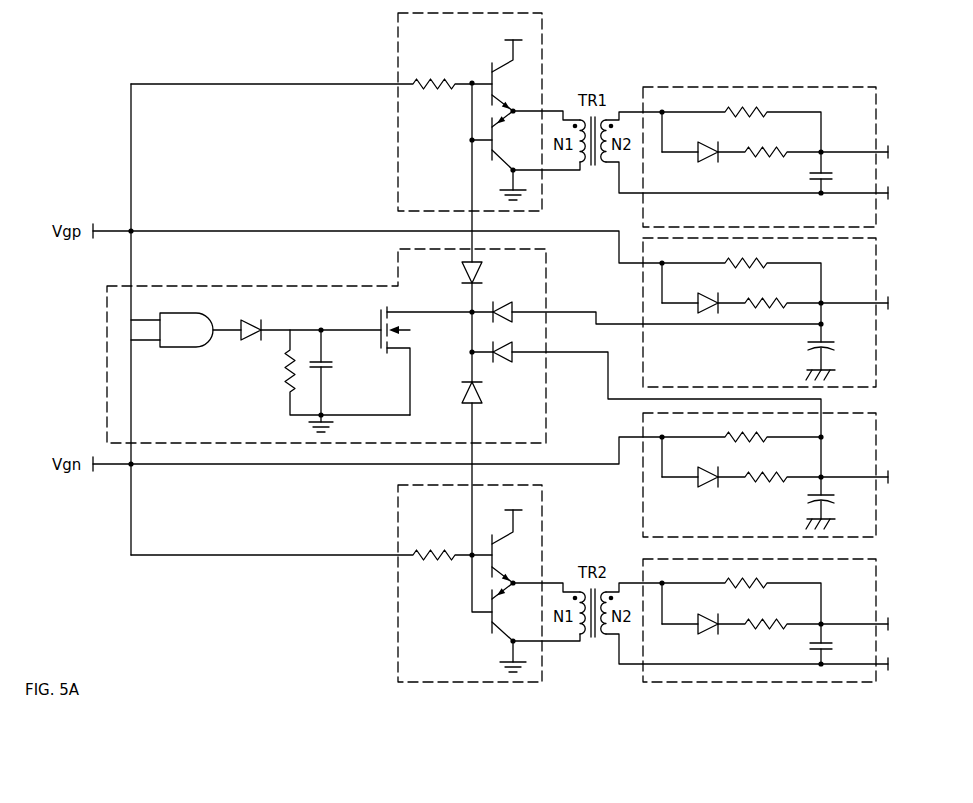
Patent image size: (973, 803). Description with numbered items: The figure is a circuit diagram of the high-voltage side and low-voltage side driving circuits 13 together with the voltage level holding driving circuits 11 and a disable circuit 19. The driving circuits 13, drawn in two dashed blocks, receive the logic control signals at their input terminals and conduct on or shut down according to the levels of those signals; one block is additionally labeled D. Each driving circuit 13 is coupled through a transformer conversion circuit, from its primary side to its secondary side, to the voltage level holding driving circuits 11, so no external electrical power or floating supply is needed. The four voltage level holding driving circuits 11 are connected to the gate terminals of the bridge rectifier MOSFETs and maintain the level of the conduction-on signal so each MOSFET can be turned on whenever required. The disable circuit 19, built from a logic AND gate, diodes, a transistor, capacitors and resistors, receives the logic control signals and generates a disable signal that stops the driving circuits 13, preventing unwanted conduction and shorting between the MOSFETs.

The voltage level holding driving circuits 11 is at (876, 112).
The high-voltage side and low-voltage side driving circuits 13 is at (398, 38).
The disable circuit 19 is at (107, 315).
The driver block D is at (542, 486).